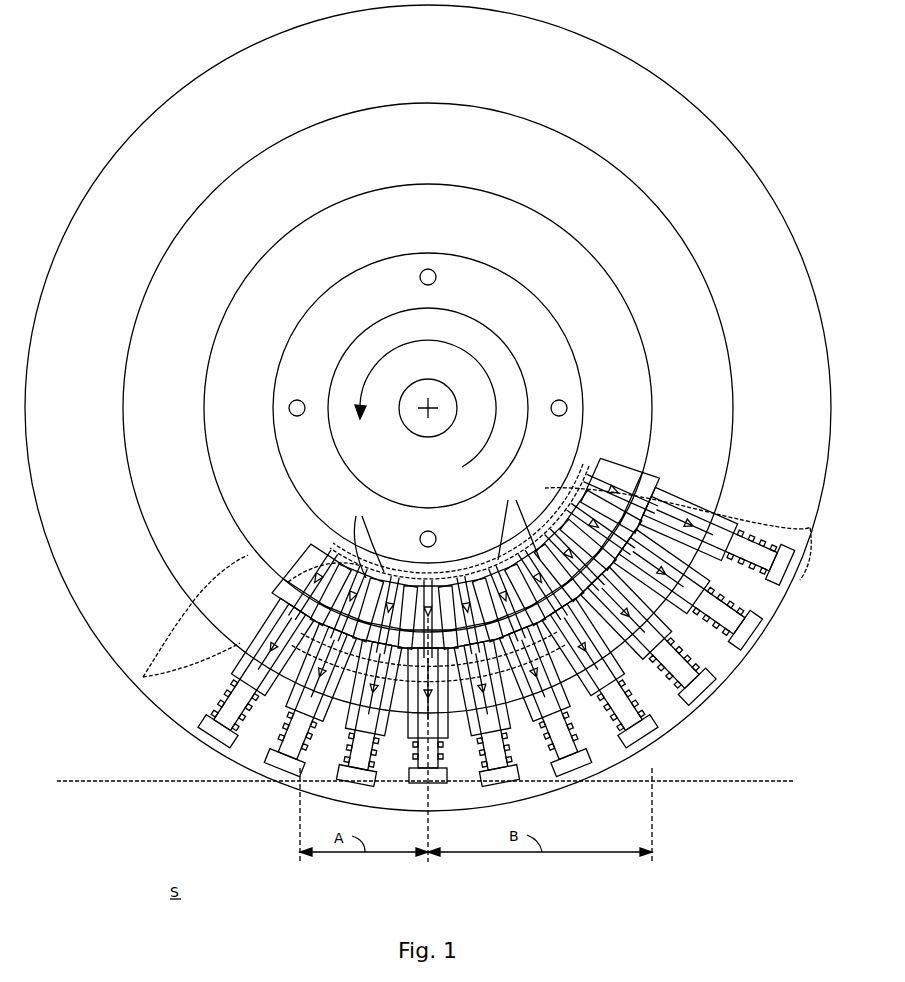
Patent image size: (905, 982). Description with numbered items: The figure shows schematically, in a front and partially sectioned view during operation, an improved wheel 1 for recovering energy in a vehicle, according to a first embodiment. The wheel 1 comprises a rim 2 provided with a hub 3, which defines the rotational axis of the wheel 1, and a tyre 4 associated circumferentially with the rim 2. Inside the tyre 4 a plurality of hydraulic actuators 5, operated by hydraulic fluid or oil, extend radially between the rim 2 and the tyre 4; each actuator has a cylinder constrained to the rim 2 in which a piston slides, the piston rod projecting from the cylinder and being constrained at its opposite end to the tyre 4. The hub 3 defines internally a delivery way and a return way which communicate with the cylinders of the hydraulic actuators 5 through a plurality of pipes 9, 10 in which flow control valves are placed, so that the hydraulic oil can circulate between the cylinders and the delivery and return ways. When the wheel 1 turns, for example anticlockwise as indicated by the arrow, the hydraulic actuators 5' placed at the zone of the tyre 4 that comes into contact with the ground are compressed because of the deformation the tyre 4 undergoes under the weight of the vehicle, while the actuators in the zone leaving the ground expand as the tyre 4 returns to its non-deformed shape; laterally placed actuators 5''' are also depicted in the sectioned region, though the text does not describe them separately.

The wheel 1 is at (428, 408).
The rim 2 is at (208, 487).
The hub 3 is at (445, 395).
The tyre 4 is at (88, 600).
The hydraulic actuators 5 is at (440, 656).
The hydraulic actuators 5' is at (457, 702).
The lateral retracted sweeping elements 5''' is at (456, 616).
The pipes 9 is at (368, 538).
The pipes 10 is at (519, 521).